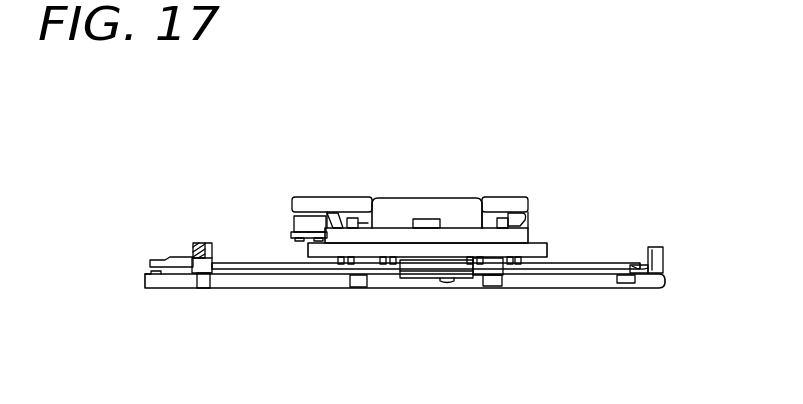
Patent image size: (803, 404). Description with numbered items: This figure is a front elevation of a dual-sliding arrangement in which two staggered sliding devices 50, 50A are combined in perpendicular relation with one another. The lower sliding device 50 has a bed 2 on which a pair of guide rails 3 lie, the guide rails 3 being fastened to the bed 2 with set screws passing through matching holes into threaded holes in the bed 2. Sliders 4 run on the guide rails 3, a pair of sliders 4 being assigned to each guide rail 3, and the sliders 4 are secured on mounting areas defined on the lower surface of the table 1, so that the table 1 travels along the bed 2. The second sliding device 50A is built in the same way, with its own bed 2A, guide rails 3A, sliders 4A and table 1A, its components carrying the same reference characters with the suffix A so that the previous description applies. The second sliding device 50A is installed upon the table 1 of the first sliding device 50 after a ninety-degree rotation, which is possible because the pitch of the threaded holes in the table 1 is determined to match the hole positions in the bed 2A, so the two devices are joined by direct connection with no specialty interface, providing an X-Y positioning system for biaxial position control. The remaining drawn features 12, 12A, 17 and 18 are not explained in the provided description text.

The table 1 is at (427, 300).
The table of the second sliding device 1A is at (410, 164).
The bed 2 is at (426, 317).
The bed of the second sliding device 2A is at (426, 192).
The guide rail 3 is at (405, 311).
The guide rail of the second sliding device 3A is at (432, 173).
The slider 4 is at (429, 302).
The slider of the second sliding device 4A is at (438, 191).
The clip 12 is at (441, 221).
The upper cover 12A is at (427, 172).
The lead 17 is at (222, 224).
The tongue 18 is at (200, 303).
The sliding device 50 is at (689, 249).
The second sliding device 50A is at (569, 181).